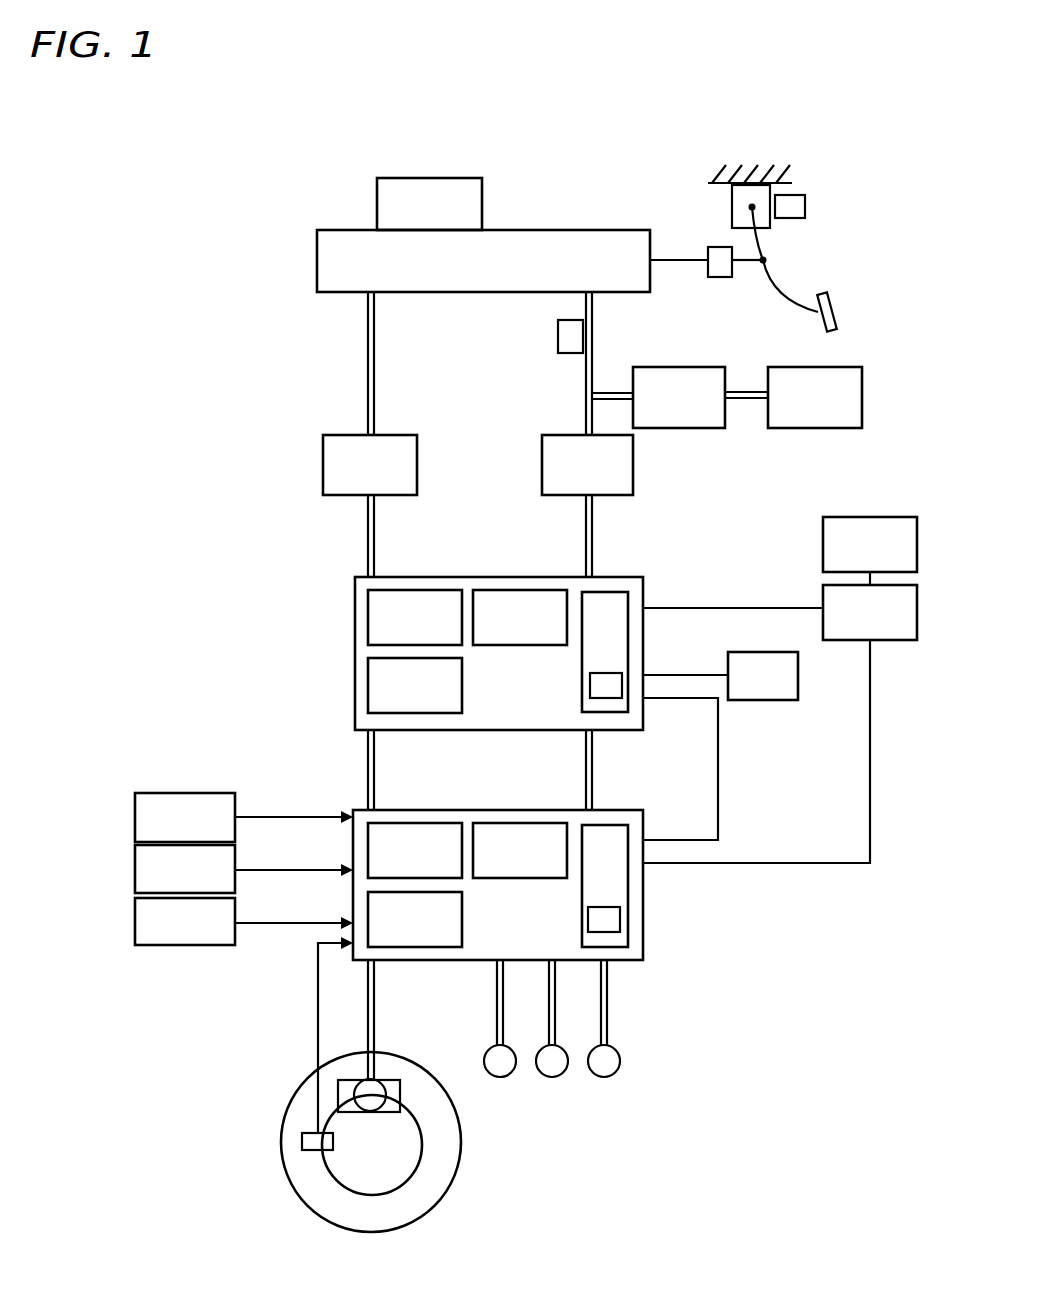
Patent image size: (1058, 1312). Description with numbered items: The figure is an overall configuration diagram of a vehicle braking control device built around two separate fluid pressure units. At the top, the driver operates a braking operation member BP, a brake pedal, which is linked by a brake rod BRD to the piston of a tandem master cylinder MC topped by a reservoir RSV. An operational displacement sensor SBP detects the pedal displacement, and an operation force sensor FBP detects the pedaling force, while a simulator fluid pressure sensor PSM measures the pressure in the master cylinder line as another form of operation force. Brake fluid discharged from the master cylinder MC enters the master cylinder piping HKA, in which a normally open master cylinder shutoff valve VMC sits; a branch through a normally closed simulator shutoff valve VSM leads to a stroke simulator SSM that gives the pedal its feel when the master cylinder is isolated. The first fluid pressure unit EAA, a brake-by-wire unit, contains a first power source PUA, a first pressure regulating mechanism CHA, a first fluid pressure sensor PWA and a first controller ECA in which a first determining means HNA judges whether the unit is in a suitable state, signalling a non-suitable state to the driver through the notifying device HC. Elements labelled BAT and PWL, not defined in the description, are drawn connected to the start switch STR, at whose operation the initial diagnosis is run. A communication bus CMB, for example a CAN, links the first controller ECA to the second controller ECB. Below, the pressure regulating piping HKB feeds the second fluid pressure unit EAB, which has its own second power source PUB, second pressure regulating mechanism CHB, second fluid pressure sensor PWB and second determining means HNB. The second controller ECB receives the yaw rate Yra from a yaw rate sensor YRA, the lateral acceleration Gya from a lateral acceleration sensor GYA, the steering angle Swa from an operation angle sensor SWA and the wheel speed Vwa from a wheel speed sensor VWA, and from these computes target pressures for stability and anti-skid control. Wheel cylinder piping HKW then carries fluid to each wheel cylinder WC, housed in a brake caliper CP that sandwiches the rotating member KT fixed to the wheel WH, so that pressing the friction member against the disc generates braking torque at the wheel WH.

The reservoir RSV is at (429, 204).
The master cylinder MC is at (483, 261).
The master cylinder shutoff valve VMC is at (478, 465).
The simulator fluid pressure sensor PSM is at (520, 351).
The brake rod BRD is at (676, 258).
The operation force sensor FBP is at (721, 303).
The operational displacement sensor SBP is at (809, 215).
The braking operation member BP is at (818, 269).
The simulator shutoff valve VSM is at (658, 397).
The stroke simulator SSM is at (793, 397).
The fluid path HKA is at (368, 540).
The first fluid pressure unit EAA is at (480, 577).
The first power source PUA is at (415, 617).
The first fluid pressure sensor PWA is at (520, 617).
The first pressure regulating mechanism CHA is at (415, 685).
The first determining means HNA is at (590, 683).
The first controller ECA is at (620, 640).
The power line PWL is at (767, 605).
The battery BAT is at (870, 551).
The start switch STR is at (870, 612).
The notifying device HC is at (720, 676).
The communication bus CMB is at (724, 769).
The fluid path HKB is at (368, 749).
The second fluid pressure unit EAB is at (480, 810).
The second power source PUB is at (415, 850).
The second fluid pressure sensor PWB is at (520, 850).
The second pressure regulating mechanism CHB is at (415, 919).
The second determining means HNB is at (588, 918).
The second controller ECB is at (620, 897).
The yaw rate sensor YRA is at (185, 817).
The lateral acceleration sensor GYA is at (185, 869).
The operation angle sensor SWA is at (185, 921).
The yaw rate Yra is at (294, 801).
The lateral acceleration Gya is at (294, 852).
The steering angle Swa is at (294, 904).
The wheel speed Vwa is at (294, 1035).
The fluid path HKW is at (375, 1007).
The wheel cylinder WC is at (620, 1060).
The wheel WH is at (292, 1187).
The rotating member KT is at (372, 1145).
The brake caliper CP is at (400, 1090).
The wheel speed sensor VWA is at (318, 1140).